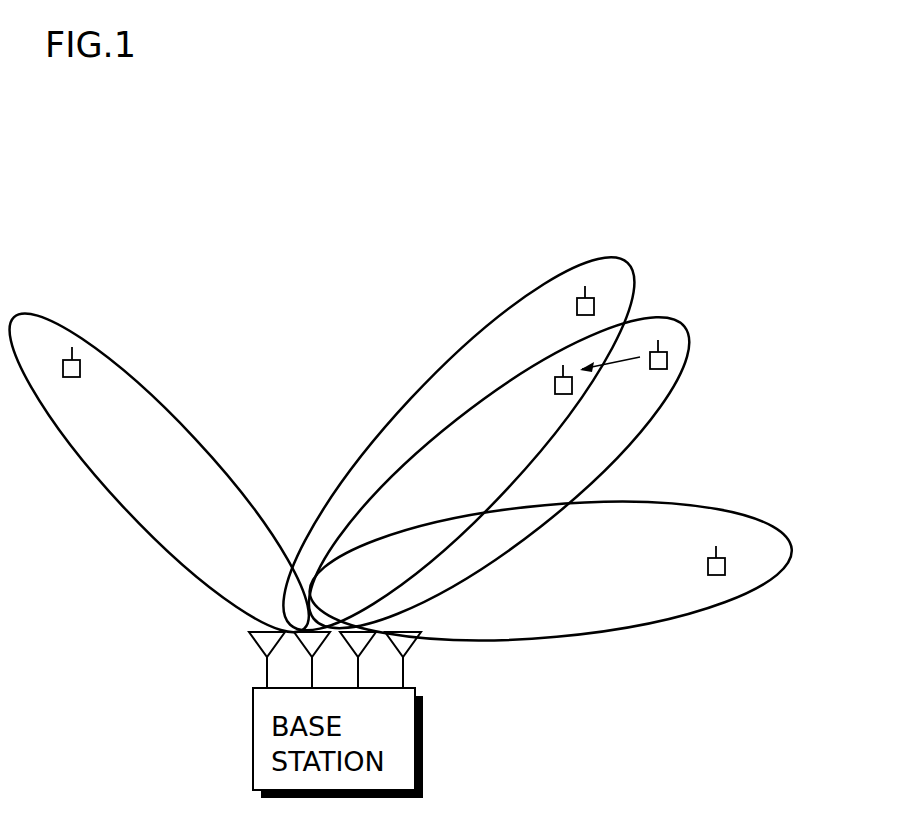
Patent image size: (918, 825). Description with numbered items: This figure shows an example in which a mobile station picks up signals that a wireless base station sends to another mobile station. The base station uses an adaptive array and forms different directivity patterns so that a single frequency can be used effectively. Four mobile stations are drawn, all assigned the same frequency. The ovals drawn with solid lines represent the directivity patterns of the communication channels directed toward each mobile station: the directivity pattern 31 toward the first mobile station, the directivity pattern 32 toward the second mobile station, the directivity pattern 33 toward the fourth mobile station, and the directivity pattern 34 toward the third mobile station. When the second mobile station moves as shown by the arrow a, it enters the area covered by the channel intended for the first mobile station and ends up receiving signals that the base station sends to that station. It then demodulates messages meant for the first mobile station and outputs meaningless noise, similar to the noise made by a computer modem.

The directivity pattern 31 is at (632, 270).
The directivity pattern 32 is at (688, 333).
The directivity pattern 33 is at (753, 515).
The directivity pattern 34 is at (50, 317).
The arrow a is at (623, 363).